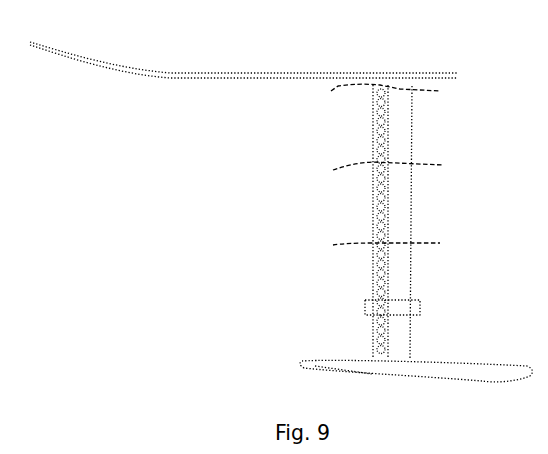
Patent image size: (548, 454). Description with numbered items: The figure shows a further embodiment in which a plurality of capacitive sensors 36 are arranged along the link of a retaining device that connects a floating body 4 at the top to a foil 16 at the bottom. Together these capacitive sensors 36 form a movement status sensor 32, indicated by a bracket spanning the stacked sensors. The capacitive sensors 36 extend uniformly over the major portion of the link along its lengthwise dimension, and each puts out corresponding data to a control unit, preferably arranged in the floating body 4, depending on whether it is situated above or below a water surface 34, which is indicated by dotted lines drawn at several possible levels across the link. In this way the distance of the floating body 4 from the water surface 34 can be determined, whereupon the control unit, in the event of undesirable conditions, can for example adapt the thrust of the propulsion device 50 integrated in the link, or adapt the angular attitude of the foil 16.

The floating body 4 is at (273, 77).
The foil 16 is at (317, 365).
The movement status sensor 32 is at (487, 347).
The water surface 34 is at (338, 87).
The capacitive sensors 36 is at (383, 110).
The propulsion device 50 is at (376, 318).